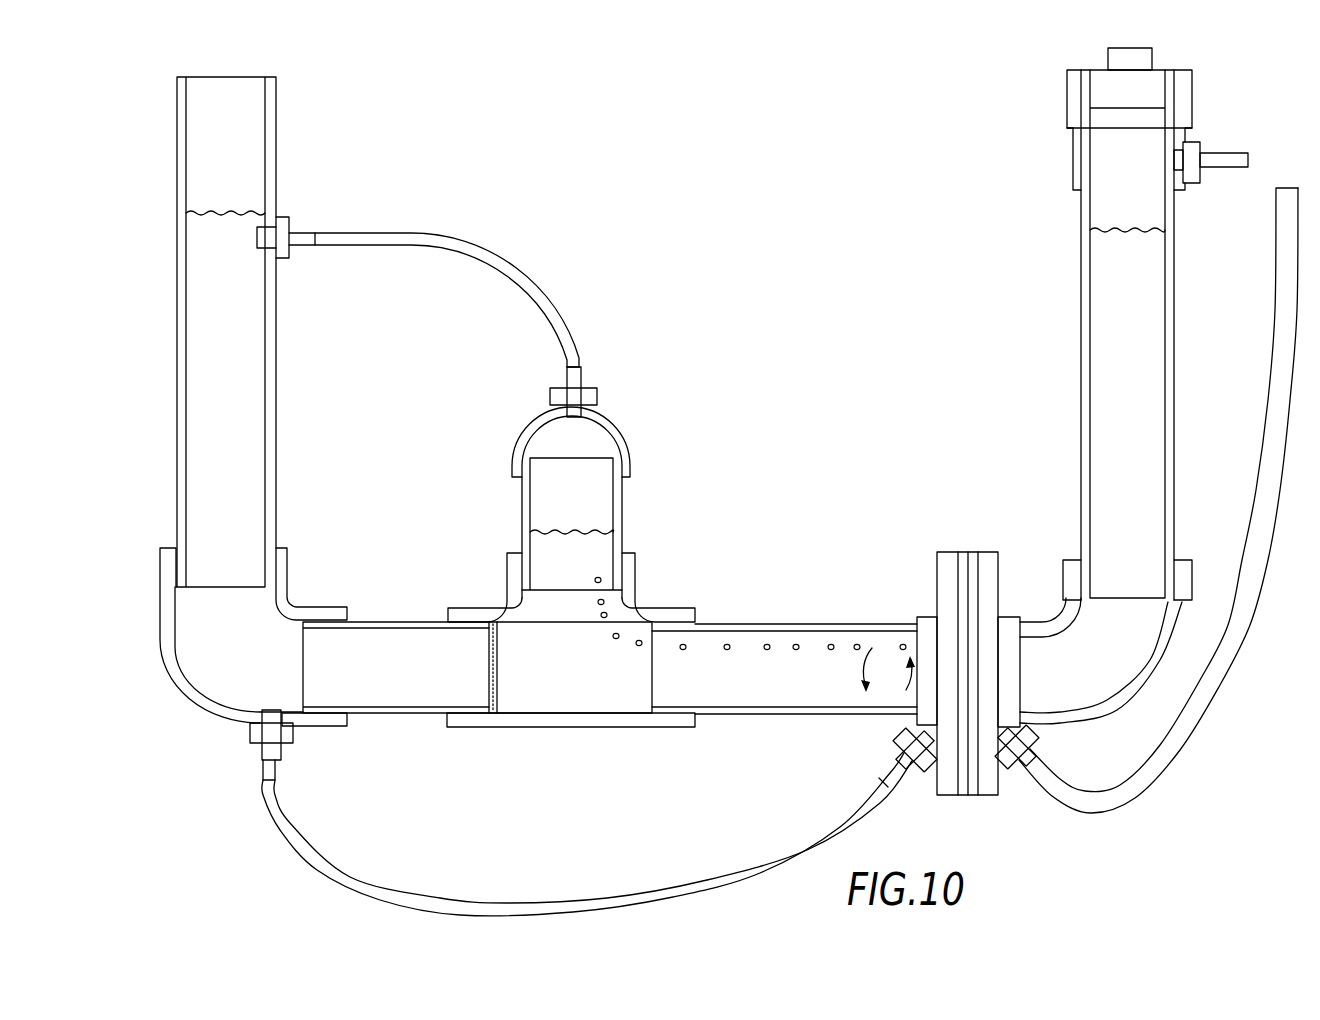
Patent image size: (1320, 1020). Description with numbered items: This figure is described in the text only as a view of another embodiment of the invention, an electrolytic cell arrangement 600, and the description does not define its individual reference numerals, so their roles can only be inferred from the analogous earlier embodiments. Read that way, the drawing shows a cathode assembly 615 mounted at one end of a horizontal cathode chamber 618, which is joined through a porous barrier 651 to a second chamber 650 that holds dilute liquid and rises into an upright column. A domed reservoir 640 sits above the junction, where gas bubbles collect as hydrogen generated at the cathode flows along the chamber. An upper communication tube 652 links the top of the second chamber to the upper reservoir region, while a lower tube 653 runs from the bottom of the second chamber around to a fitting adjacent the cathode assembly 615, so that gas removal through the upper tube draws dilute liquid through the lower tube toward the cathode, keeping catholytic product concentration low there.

The fluid circulation system 600 is at (786, 308).
The coupling / valve assembly 615 is at (948, 578).
The conduit 618 is at (840, 625).
The reservoir chamber 640 is at (590, 442).
The elbow connector 650 is at (285, 573).
The membrane / filter 651 is at (487, 648).
The upper tubing 652 is at (413, 235).
The lower tubing 653 is at (533, 903).